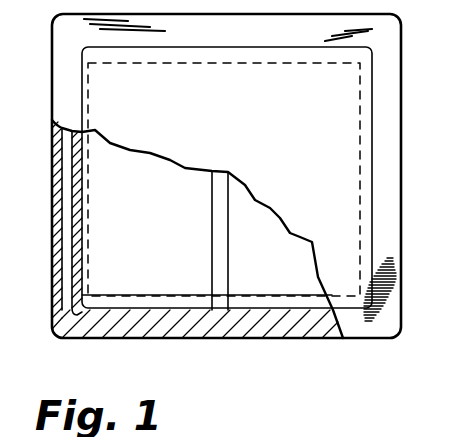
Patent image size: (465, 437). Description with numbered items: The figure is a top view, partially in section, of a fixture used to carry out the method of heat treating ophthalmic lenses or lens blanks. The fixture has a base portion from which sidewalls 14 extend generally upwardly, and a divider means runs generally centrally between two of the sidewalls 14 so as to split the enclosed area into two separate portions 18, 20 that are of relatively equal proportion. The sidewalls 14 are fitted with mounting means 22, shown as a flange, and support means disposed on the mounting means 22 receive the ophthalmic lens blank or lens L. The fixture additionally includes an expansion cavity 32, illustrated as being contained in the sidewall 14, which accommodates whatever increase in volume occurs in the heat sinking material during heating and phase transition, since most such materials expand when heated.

The sidewalls 14 is at (392, 244).
The portion 18 is at (158, 266).
The portion 20 is at (286, 262).
The mounting means 22 is at (373, 78).
The expansion cavity 32 is at (63, 152).
The lens L is at (262, 122).